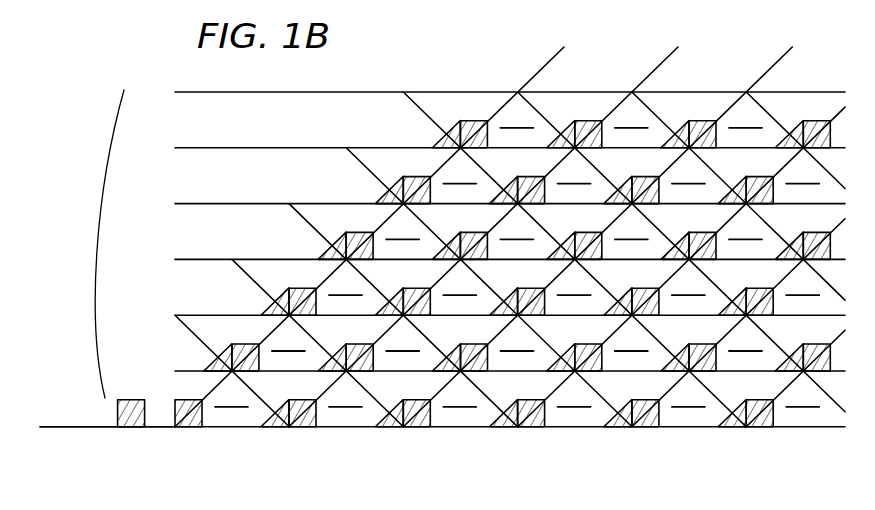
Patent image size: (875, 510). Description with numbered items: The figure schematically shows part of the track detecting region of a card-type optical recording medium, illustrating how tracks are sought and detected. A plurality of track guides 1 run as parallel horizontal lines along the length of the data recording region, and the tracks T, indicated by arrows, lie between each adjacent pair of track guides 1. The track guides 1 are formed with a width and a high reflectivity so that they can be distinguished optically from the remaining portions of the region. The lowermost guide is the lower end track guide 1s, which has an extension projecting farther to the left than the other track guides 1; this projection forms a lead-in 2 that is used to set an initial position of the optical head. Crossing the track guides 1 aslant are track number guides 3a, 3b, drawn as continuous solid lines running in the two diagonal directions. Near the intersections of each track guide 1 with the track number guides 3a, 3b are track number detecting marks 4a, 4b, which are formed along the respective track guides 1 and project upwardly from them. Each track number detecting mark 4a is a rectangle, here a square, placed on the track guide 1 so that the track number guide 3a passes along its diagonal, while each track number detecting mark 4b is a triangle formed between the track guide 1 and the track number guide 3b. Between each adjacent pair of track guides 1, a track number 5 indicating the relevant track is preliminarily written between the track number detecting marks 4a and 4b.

The track guide 1 is at (100, 244).
The lower end track guide 1s is at (223, 428).
The lead-in 2 is at (158, 432).
The track number guide 3a is at (509, 100).
The track number guide 3b is at (540, 110).
The track number detecting mark 4a is at (462, 120).
The track number detecting mark 4b is at (377, 187).
The track number 5 is at (653, 120).
The track T is at (212, 123).